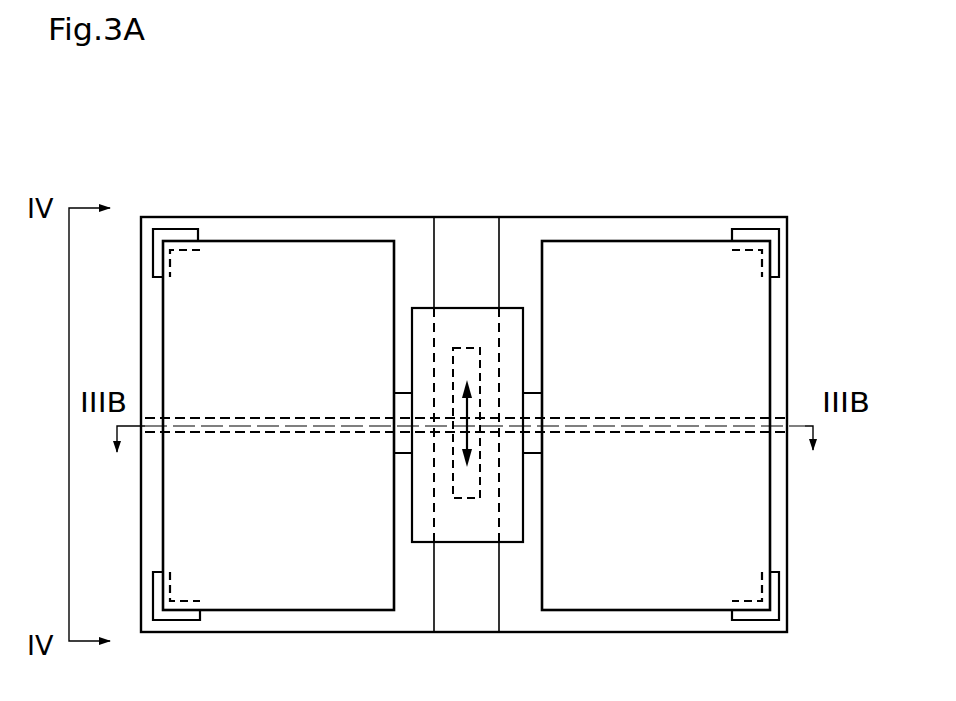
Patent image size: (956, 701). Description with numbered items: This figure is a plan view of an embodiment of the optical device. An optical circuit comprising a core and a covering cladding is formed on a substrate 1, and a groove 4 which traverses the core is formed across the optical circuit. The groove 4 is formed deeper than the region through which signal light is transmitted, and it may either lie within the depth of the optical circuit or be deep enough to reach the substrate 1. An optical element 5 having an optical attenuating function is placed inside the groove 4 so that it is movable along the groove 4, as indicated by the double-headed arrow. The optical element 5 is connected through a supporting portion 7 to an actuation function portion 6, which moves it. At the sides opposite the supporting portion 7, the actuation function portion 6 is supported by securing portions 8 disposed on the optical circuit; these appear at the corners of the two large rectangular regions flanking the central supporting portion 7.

The substrate 1 is at (522, 247).
The groove 4 is at (447, 572).
The optical element 5 is at (467, 490).
The actuation function portion 6 is at (328, 290).
The supporting portion 7 is at (457, 331).
The securing portions 8 is at (161, 228).